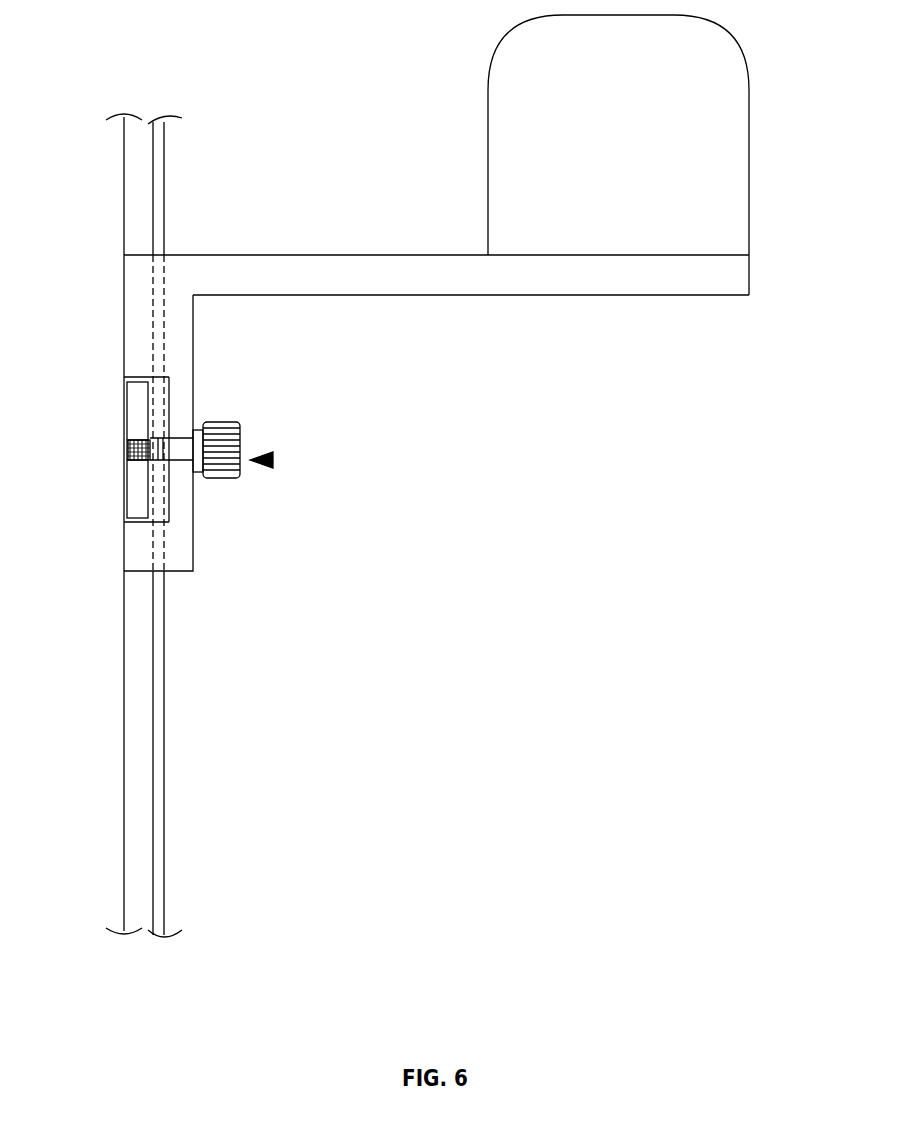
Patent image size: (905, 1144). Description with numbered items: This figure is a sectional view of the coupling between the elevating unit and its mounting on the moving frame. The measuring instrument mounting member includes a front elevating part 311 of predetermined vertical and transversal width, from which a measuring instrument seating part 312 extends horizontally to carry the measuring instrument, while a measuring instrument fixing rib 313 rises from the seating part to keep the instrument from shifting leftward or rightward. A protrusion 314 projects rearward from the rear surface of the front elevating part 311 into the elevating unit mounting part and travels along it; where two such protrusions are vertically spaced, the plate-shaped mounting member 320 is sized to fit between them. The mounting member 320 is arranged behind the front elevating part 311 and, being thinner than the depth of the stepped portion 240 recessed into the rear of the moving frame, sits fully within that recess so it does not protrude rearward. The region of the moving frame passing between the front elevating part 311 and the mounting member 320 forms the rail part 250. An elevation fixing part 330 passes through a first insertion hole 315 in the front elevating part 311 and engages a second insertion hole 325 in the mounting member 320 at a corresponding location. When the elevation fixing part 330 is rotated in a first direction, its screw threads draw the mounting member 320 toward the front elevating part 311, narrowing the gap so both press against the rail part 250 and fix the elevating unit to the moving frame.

The stepped portion 240 is at (124, 160).
The rail part 250 is at (166, 165).
The front elevating part 311 is at (182, 400).
The measuring instrument seating part 312 is at (352, 272).
The measuring instrument fixing rib 313 is at (735, 127).
The protrusion 314 is at (124, 310).
The first insertion hole 315 is at (181, 472).
The mounting member 320 is at (135, 430).
The second insertion hole 325 is at (131, 462).
The elevation fixing part 330 is at (272, 461).